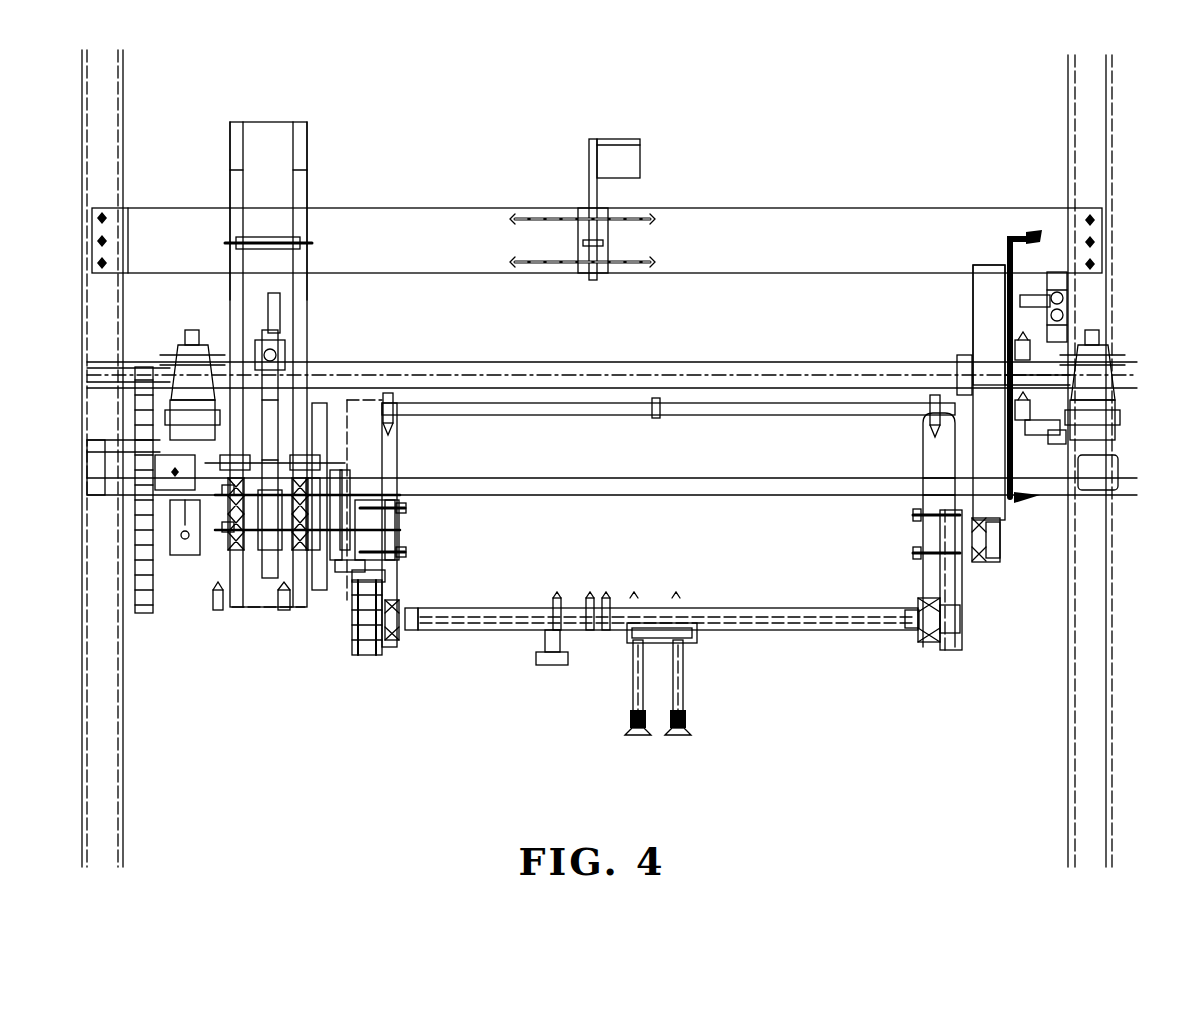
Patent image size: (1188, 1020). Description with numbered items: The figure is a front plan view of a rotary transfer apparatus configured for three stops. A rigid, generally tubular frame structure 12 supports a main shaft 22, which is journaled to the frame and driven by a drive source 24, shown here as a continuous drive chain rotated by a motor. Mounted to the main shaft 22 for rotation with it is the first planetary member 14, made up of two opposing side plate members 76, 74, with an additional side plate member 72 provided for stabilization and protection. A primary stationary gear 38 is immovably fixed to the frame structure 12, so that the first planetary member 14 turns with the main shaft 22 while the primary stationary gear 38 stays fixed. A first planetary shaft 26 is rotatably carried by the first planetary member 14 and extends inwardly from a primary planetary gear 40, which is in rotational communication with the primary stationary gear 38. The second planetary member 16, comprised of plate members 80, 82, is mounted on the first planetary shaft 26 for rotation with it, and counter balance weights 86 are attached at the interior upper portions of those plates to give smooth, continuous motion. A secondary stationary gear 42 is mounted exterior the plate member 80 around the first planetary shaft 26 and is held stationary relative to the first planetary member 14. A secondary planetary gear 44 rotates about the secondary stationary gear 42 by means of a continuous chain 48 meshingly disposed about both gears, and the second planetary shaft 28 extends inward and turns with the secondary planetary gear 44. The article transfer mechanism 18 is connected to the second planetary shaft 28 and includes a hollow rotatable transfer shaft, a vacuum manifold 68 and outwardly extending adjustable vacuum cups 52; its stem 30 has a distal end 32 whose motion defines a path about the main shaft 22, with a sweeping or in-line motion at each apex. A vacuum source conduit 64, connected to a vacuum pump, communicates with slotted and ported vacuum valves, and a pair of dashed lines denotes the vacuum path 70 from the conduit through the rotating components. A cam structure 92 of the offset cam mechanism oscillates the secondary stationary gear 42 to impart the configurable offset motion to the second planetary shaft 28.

The frame structure 12 is at (478, 205).
The first planetary member 14 is at (581, 360).
The second planetary member 16 is at (738, 590).
The article transfer mechanism 18 is at (661, 717).
The main shaft 22 is at (706, 360).
The drive source 24 is at (143, 615).
The first planetary shaft 26 is at (318, 548).
The second planetary shaft 28 is at (515, 607).
The stem 30 is at (632, 668).
The distal end 32 is at (630, 722).
The primary stationary gear 38 is at (283, 300).
The primary planetary gear 40 is at (260, 575).
The secondary stationary gear 42 is at (365, 498).
The secondary planetary gear 44 is at (365, 659).
The continuous chain 48 is at (388, 578).
The vacuum cup 52 is at (633, 737).
The vacuum source conduit 64 is at (1060, 438).
The vacuum manifold 68 is at (695, 641).
The vacuum path 70 is at (701, 551).
The additional side plate member 72 is at (228, 150).
The side plate member 74 is at (968, 291).
The side plate member 76 is at (310, 150).
The plate member 80 is at (400, 452).
The plate member 82 is at (920, 451).
The counter balance weight 86 is at (790, 420).
The cam structure 92 is at (327, 402).